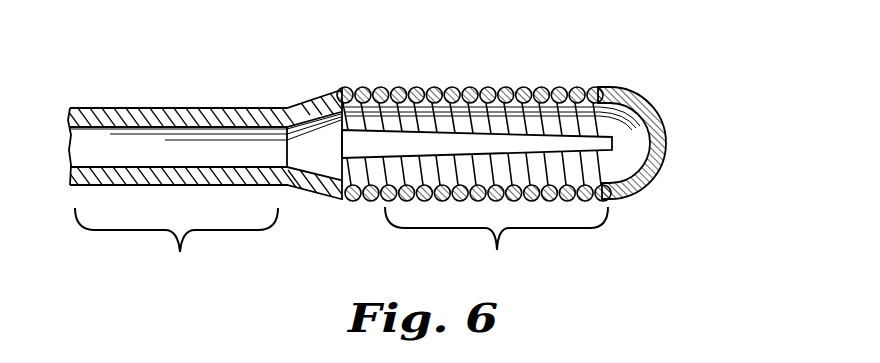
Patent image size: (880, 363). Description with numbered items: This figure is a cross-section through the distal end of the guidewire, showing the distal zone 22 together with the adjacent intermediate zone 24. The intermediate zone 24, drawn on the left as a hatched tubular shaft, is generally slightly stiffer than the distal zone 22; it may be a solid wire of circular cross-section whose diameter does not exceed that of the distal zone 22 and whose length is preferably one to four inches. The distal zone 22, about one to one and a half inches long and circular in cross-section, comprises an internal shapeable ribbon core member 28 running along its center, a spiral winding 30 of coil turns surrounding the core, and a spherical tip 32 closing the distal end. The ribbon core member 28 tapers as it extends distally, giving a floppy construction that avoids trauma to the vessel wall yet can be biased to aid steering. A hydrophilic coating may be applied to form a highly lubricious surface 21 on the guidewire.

The surface 21 is at (180, 108).
The distal zone 22 is at (496, 249).
The intermediate zone 24 is at (176, 247).
The internal shapeable ribbon core member 28 is at (612, 143).
The spiral winding 30 is at (503, 87).
The spherical tip 32 is at (645, 96).